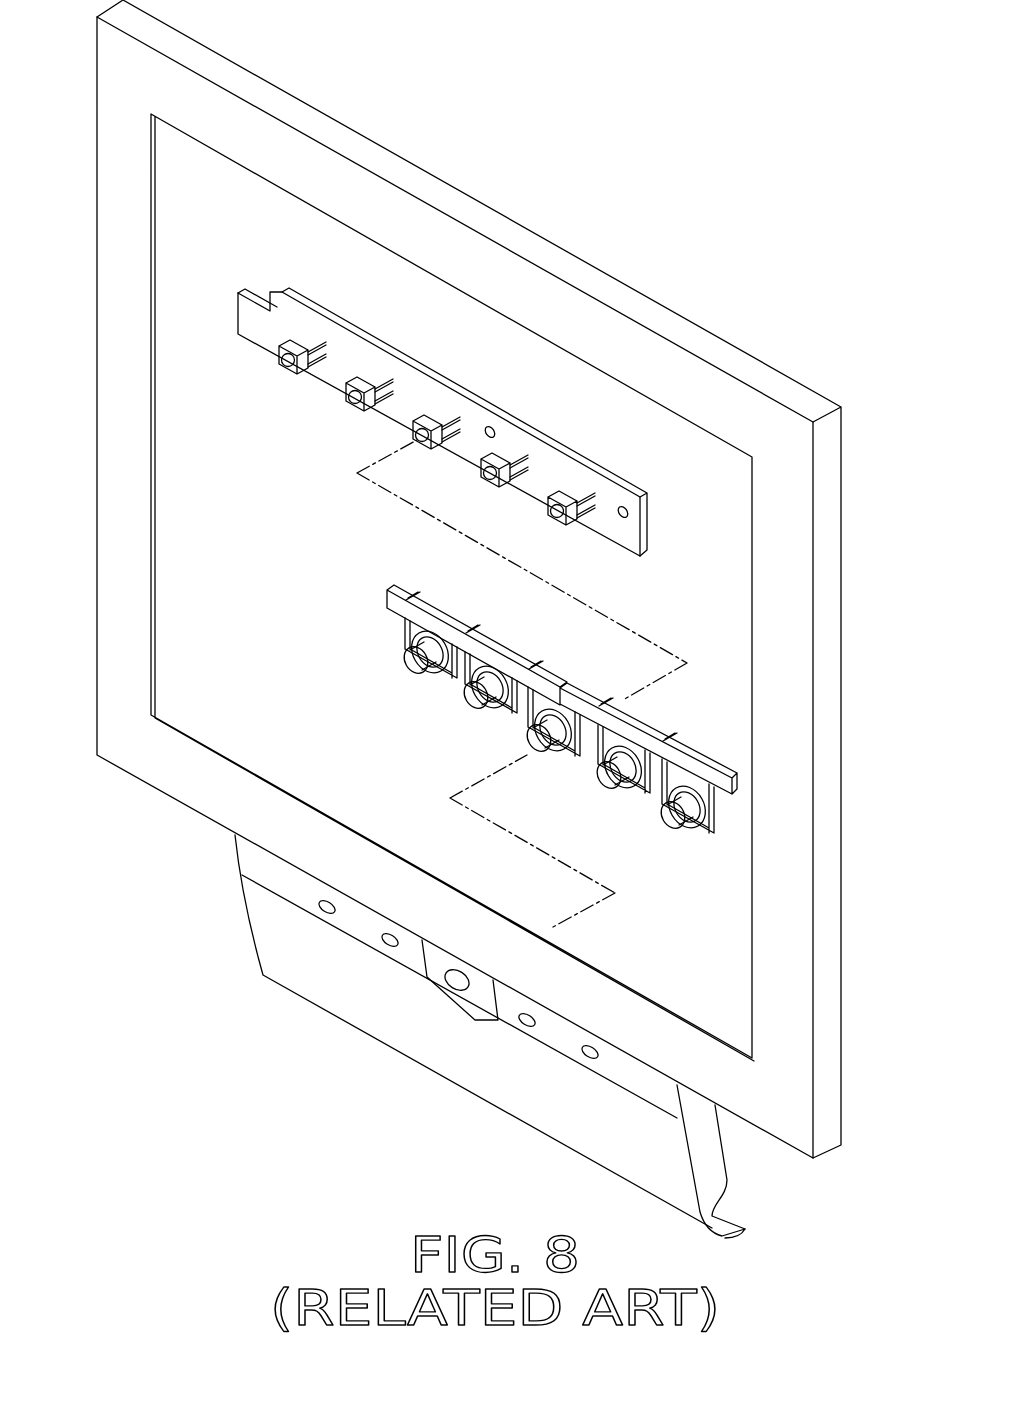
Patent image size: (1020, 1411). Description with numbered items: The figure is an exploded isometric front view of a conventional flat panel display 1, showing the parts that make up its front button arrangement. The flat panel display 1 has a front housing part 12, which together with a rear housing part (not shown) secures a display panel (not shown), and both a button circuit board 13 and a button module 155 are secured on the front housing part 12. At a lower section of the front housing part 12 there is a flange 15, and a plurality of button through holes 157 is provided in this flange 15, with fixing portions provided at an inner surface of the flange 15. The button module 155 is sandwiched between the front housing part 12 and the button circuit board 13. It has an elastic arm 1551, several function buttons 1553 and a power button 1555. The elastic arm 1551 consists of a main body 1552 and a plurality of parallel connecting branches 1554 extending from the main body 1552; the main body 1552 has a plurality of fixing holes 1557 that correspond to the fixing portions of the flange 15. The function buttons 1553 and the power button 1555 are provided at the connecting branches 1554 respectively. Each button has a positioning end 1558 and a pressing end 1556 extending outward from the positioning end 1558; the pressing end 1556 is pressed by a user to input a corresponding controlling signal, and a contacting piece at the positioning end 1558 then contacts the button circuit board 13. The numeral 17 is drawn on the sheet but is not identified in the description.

The flat panel display 1 is at (420, 79).
The front housing part 12 is at (408, 218).
The button circuit board 13 is at (620, 535).
The flange 15 is at (310, 965).
The display panel opening 17 is at (437, 312).
The button module 155 is at (462, 732).
The button through holes 157 is at (313, 913).
The elastic arm 1551 is at (462, 686).
The main body 1552 is at (392, 582).
The function buttons 1553 is at (412, 671).
The connecting branches 1554 is at (401, 633).
The power button 1555 is at (527, 742).
The pressing end 1556 is at (683, 818).
The fixing holes 1557 is at (400, 602).
The positioning end 1558 is at (693, 832).